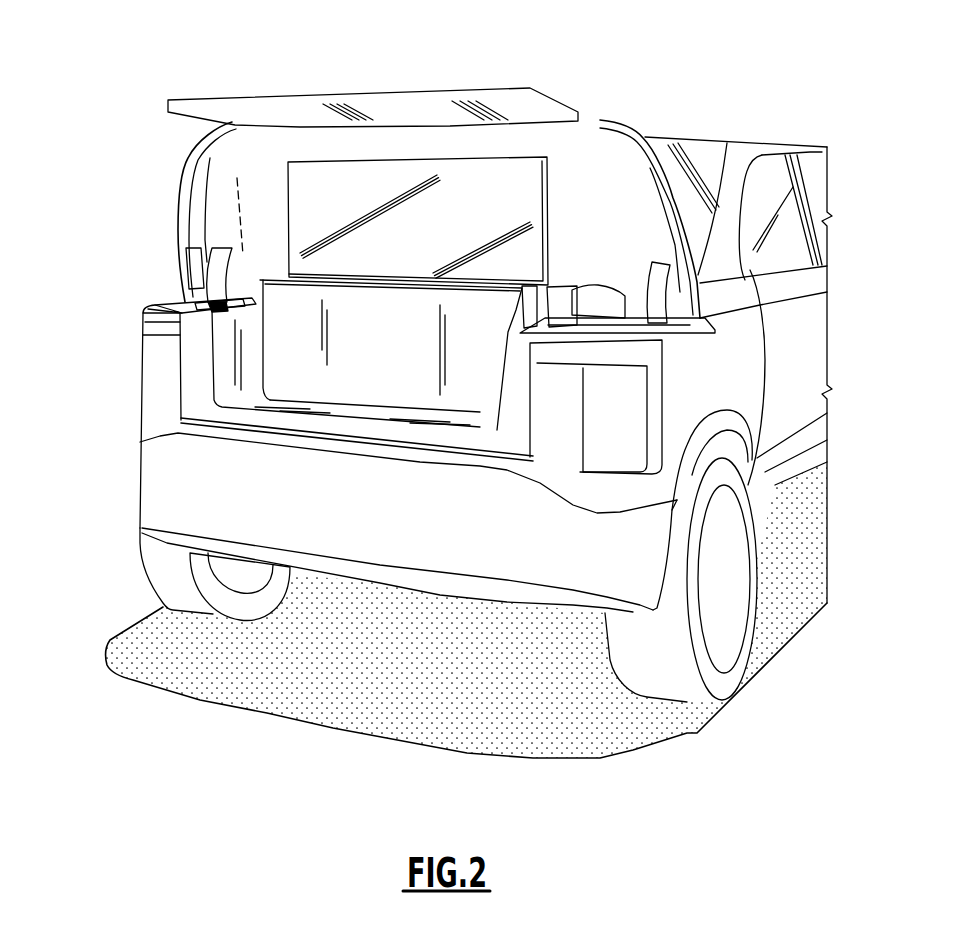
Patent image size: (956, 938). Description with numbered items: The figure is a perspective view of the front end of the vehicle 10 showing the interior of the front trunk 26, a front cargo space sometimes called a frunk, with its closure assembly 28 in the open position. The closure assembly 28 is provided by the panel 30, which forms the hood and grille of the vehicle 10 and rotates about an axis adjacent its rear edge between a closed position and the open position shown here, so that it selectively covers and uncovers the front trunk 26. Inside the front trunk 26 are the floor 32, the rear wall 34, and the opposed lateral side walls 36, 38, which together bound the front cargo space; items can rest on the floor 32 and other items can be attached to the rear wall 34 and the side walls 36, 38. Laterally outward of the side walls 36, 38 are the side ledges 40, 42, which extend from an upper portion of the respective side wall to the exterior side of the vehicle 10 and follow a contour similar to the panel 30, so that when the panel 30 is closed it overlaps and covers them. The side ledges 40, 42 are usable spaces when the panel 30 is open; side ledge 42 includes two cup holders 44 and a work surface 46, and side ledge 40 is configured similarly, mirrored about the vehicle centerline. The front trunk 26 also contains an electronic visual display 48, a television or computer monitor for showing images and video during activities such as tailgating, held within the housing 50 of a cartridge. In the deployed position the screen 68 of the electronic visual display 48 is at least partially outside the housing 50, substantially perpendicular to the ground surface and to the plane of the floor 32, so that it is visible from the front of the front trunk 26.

The vehicle 10 is at (138, 64).
The front trunk 26 is at (215, 320).
The closure assembly 28 is at (168, 188).
The panel 30 is at (663, 162).
The floor 32 is at (340, 417).
The rear wall 34 is at (593, 300).
The lateral side wall 36 is at (222, 348).
The lateral side wall 38 is at (488, 387).
The side ledge 40 is at (157, 296).
The side ledge 42 is at (683, 342).
The cup holders 44 is at (534, 329).
The work surface 46 is at (615, 327).
The electronic visual display 48 is at (556, 212).
The housing 50 is at (250, 368).
The screen 68 is at (365, 193).